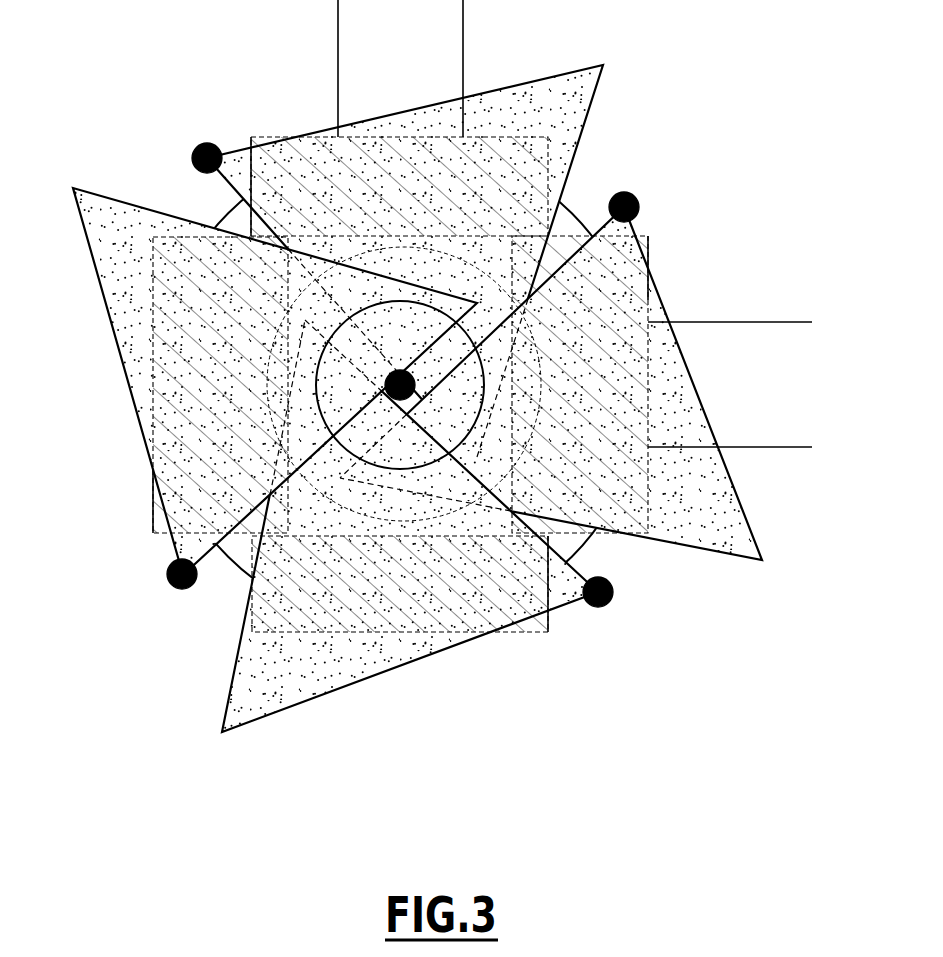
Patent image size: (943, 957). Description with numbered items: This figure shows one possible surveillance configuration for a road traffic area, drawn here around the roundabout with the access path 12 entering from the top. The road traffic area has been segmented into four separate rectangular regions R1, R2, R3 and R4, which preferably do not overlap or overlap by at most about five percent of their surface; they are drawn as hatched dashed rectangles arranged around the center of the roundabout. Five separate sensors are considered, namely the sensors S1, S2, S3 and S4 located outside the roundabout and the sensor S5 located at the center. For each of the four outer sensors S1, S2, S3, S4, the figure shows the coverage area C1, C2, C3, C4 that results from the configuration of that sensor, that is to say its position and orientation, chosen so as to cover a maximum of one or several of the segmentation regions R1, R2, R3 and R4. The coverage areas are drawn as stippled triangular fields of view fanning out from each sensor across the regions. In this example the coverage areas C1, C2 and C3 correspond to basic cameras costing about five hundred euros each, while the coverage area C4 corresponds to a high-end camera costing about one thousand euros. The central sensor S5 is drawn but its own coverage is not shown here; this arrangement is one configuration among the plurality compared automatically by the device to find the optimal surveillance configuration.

The access path 12 is at (464, 50).
The coverage area C1 is at (590, 103).
The coverage area C2 is at (697, 380).
The coverage area C3 is at (340, 690).
The coverage area C4 is at (95, 262).
The rectangular region R1 is at (263, 137).
The rectangular region R2 is at (651, 253).
The rectangular region R3 is at (523, 634).
The rectangular region R4 is at (153, 500).
The sensor S1 is at (205, 143).
The sensor S2 is at (632, 193).
The sensor S3 is at (600, 608).
The sensor S4 is at (173, 588).
The sensor S5 is at (392, 397).